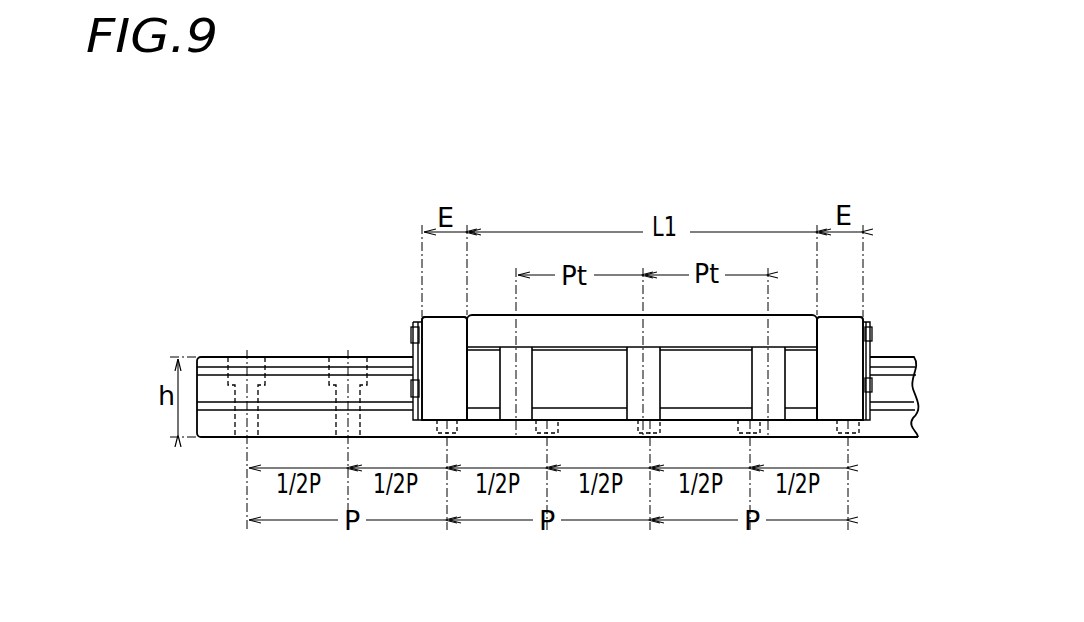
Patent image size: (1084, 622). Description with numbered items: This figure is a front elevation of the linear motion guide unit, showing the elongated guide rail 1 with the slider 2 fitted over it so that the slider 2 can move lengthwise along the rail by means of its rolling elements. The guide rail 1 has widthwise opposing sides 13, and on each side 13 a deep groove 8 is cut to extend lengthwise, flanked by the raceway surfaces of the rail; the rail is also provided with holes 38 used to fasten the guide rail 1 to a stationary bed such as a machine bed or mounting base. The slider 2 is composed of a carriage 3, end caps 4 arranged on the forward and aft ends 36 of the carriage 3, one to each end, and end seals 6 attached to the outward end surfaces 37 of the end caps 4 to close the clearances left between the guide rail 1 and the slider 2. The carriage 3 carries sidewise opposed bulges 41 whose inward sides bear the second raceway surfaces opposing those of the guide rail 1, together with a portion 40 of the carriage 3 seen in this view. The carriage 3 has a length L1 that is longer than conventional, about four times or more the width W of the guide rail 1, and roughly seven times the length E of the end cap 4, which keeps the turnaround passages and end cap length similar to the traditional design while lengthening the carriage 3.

The guide rail 1 is at (215, 383).
The slider 2 is at (497, 315).
The carriage 3 is at (723, 322).
The end cap 4 is at (432, 338).
The end seal 6 is at (413, 335).
The deep groove 8 is at (288, 382).
The widthwise opposing side 13 is at (283, 425).
The forward and aft end of the carriage 36 is at (462, 355).
The outward end surface of the end cap 37 is at (415, 397).
The hole 38 is at (230, 377).
The carriage upper portion 40 is at (577, 330).
The sidewise opposed bulge 41 is at (604, 395).